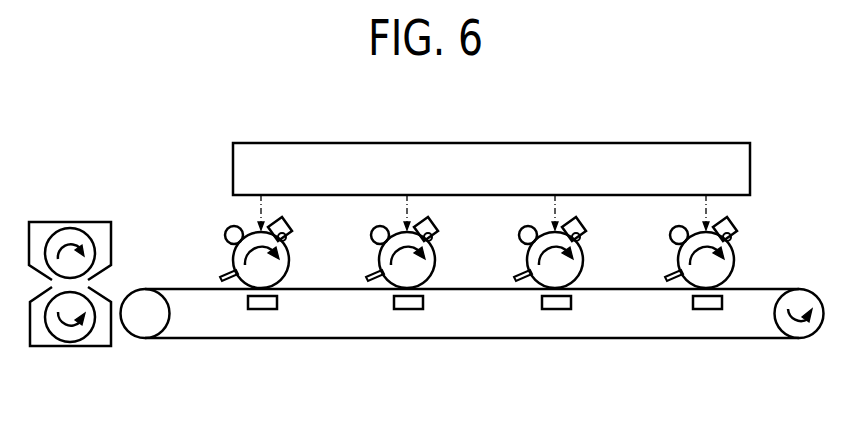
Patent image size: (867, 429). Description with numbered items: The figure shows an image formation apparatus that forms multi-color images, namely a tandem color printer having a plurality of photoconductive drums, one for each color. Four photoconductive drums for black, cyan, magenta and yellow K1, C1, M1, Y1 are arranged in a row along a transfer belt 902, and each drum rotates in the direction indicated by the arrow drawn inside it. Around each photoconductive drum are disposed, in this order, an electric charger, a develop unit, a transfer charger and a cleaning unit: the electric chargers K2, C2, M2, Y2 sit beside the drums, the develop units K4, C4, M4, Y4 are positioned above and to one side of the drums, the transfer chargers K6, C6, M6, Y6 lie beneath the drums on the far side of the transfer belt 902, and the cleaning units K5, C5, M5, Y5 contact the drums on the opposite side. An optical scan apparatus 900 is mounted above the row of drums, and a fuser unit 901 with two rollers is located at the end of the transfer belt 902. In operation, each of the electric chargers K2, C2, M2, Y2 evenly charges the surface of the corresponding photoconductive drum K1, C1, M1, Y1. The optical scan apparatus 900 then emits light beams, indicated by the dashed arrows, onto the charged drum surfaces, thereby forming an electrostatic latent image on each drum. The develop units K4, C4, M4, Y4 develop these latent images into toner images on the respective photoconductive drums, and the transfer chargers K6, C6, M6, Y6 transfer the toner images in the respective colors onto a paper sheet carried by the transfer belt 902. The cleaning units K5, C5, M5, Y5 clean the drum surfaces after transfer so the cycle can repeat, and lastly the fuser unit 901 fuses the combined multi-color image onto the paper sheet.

The optical scan apparatus 900 is at (541, 143).
The fuser unit 901 is at (92, 222).
The transfer belt 902 is at (327, 338).
The photoconductive drum for black K1 is at (289, 258).
The electric charger for black K2 is at (227, 228).
The develop unit for black K4 is at (286, 220).
The cleaning unit for black K5 is at (227, 272).
The transfer charger for black K6 is at (277, 302).
The photoconductive drum for cyan C1 is at (435, 258).
The electric charger for cyan C2 is at (373, 228).
The develop unit for cyan C4 is at (432, 220).
The cleaning unit for cyan C5 is at (373, 272).
The transfer charger for cyan C6 is at (423, 302).
The photoconductive drum for magenta M1 is at (583, 258).
The electric charger for magenta M2 is at (521, 228).
The develop unit for magenta M4 is at (580, 220).
The cleaning unit for magenta M5 is at (521, 272).
The transfer charger for magenta M6 is at (571, 302).
The photoconductive drum for yellow Y1 is at (734, 258).
The electric charger for yellow Y2 is at (672, 228).
The develop unit for yellow Y4 is at (736, 226).
The cleaning unit for yellow Y5 is at (676, 272).
The transfer charger for yellow Y6 is at (693, 302).